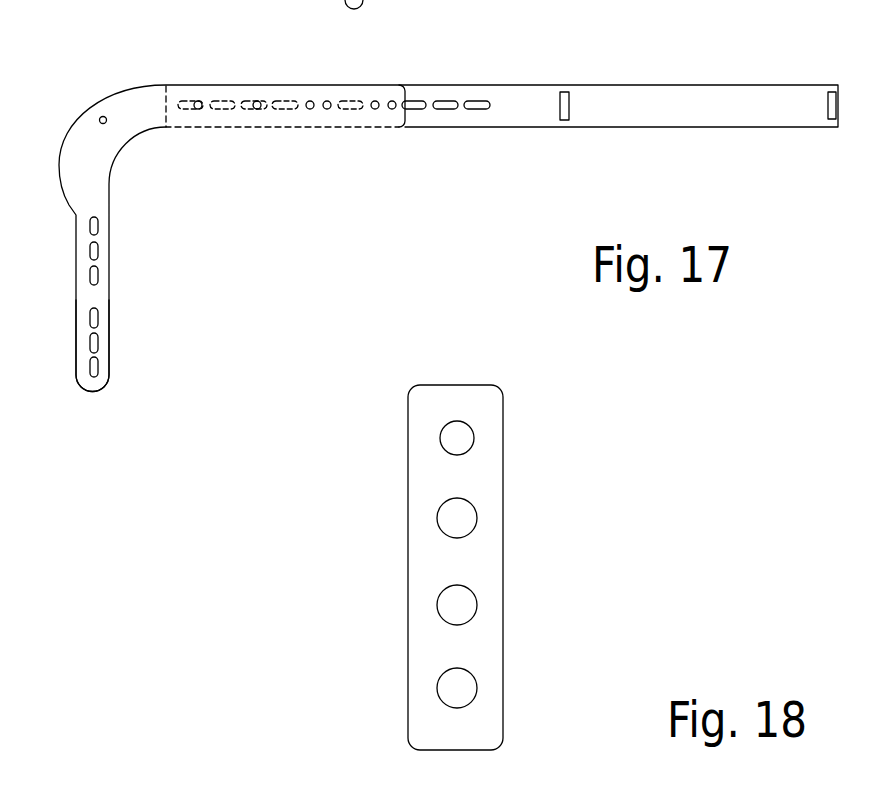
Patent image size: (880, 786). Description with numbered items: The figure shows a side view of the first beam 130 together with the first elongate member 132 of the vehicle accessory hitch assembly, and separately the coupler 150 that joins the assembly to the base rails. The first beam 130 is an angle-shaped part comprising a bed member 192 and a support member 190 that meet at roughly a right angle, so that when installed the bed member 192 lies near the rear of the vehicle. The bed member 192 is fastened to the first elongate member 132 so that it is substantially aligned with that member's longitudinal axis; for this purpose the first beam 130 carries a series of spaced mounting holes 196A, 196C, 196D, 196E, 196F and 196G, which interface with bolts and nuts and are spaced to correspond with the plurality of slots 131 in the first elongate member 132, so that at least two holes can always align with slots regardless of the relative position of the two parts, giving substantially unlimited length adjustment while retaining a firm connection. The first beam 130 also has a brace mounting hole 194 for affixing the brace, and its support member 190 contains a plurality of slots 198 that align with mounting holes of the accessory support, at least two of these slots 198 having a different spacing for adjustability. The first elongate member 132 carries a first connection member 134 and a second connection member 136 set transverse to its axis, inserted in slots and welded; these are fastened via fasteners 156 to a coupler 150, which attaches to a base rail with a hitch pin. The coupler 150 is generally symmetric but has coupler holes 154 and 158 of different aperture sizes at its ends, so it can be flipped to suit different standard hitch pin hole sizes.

In FIG. 17, the first beam 130 is at (130, 146).
In FIG. 17, the plurality of slots 131 is at (193, 110).
In FIG. 17, the first elongate member 132 is at (421, 85).
In FIG. 17, the first connection member 134 is at (558, 108).
In FIG. 17, the second connection member 136 is at (826, 105).
In FIG. 17, the support member 190 is at (110, 348).
In FIG. 17, the bed member 192 is at (305, 127).
In FIG. 17, the brace mounting hole 194 is at (100, 117).
In FIG. 17, the mounting hole 196A is at (198, 100).
In FIG. 17, the mounting hole 196C is at (258, 100).
In FIG. 17, the mounting hole 196D is at (310, 100).
In FIG. 17, the mounting hole 196E is at (331, 103).
In FIG. 17, the mounting hole 196F is at (375, 109).
In FIG. 17, the mounting hole 196G is at (393, 109).
In FIG. 17, the plurality of slots 198 is at (92, 252).
In FIG. 18, the coupler 150 is at (407, 506).
In FIG. 18, the coupler hole 154 is at (472, 431).
In FIG. 18, the fasteners 156 is at (477, 516).
In FIG. 18, the coupler hole 158 is at (445, 703).